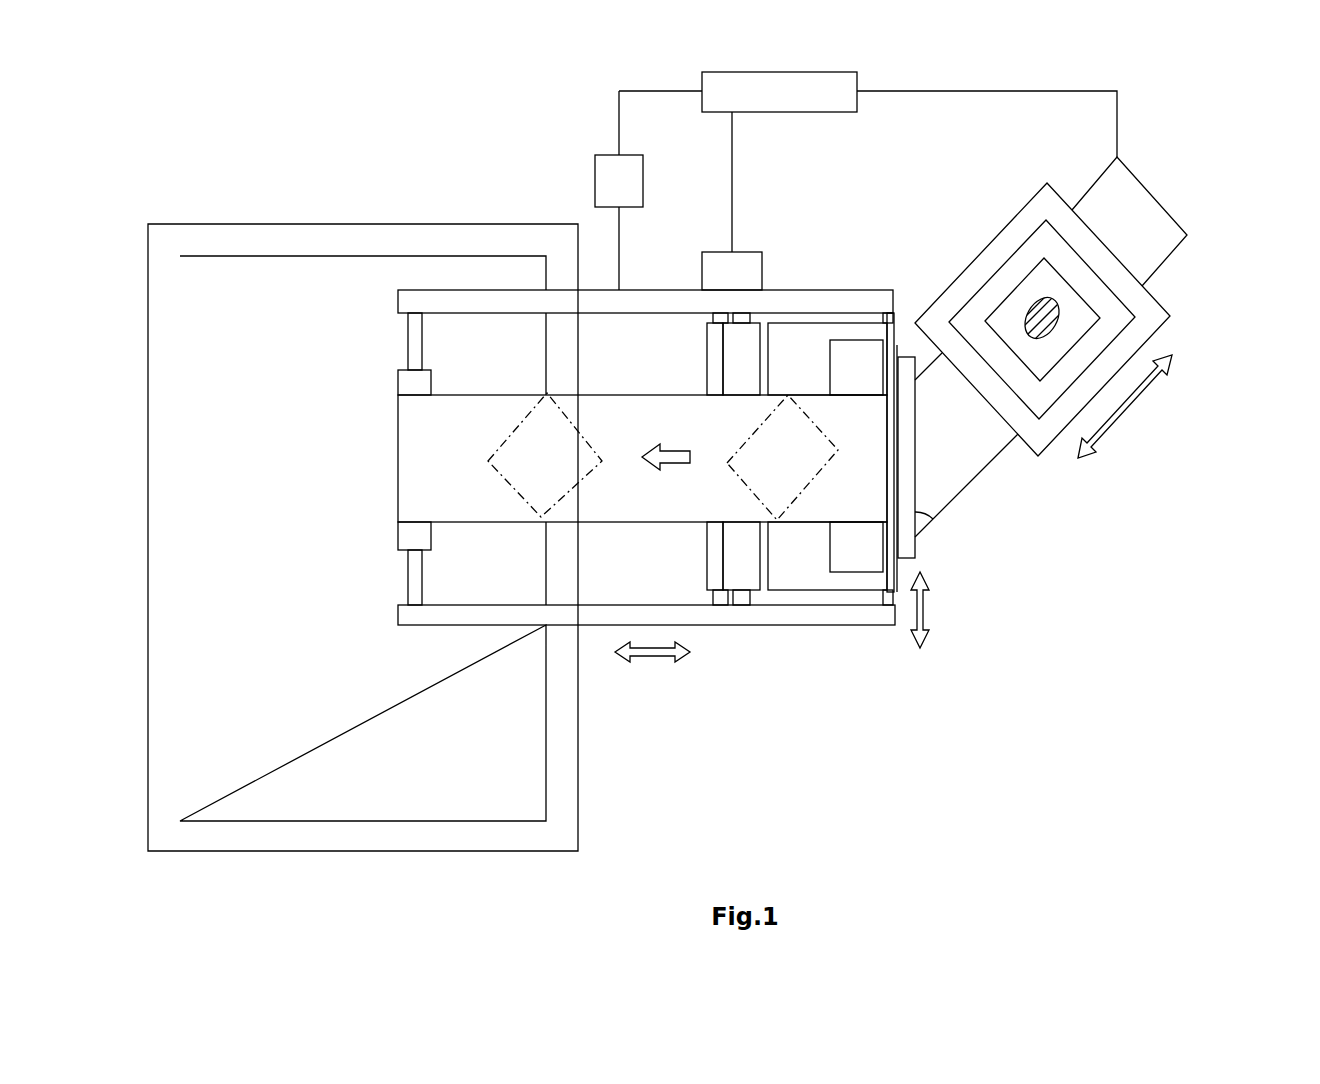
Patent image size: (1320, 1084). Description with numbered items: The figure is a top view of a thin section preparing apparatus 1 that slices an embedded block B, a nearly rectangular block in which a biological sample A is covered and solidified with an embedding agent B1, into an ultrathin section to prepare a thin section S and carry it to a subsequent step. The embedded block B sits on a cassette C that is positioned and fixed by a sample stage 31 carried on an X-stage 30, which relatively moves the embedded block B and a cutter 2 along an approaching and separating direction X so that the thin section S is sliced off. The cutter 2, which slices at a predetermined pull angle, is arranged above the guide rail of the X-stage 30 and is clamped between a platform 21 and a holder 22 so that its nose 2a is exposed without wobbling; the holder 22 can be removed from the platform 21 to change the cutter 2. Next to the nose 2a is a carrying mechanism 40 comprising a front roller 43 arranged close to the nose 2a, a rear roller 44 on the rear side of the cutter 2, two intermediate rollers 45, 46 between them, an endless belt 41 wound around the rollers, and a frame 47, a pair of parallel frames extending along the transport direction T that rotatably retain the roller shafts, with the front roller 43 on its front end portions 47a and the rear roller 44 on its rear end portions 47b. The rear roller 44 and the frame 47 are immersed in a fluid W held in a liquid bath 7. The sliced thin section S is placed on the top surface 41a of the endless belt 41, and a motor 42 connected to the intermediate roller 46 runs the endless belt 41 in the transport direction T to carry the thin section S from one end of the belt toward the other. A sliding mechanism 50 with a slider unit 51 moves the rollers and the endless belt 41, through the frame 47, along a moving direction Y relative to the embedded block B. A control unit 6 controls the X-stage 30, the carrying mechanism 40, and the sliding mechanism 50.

The thin section preparing apparatus 1 is at (1178, 154).
The cutter 2 is at (903, 355).
The nose 2a is at (918, 378).
The control unit 6 is at (793, 102).
The liquid bath 7 is at (222, 230).
The platform 21 is at (784, 350).
The holder 22 is at (863, 348).
The X-stage 30 is at (1087, 297).
The sample stage 31 is at (1148, 320).
The carrying mechanism 40 is at (610, 477).
The endless belt 41 is at (655, 410).
The top surface 41a is at (812, 405).
The motor 42 is at (714, 258).
The front roller 43 is at (883, 333).
The rear roller 44 is at (400, 386).
The intermediate roller 45 is at (740, 595).
The intermediate roller 46 is at (718, 595).
The frame 47 is at (780, 625).
The front end portions 47a is at (887, 607).
The rear end portions 47b is at (405, 612).
The sliding mechanism 50 is at (589, 195).
The slider unit 51 is at (600, 170).
The biological sample A is at (1029, 318).
The embedded block B is at (1014, 293).
The embedding agent B1 is at (1043, 275).
The cassette C is at (1032, 230).
The thin section S is at (503, 450).
The transport direction T is at (652, 669).
The fluid W is at (297, 270).
The approaching and separating direction X is at (1125, 406).
The moving direction Y is at (931, 610).